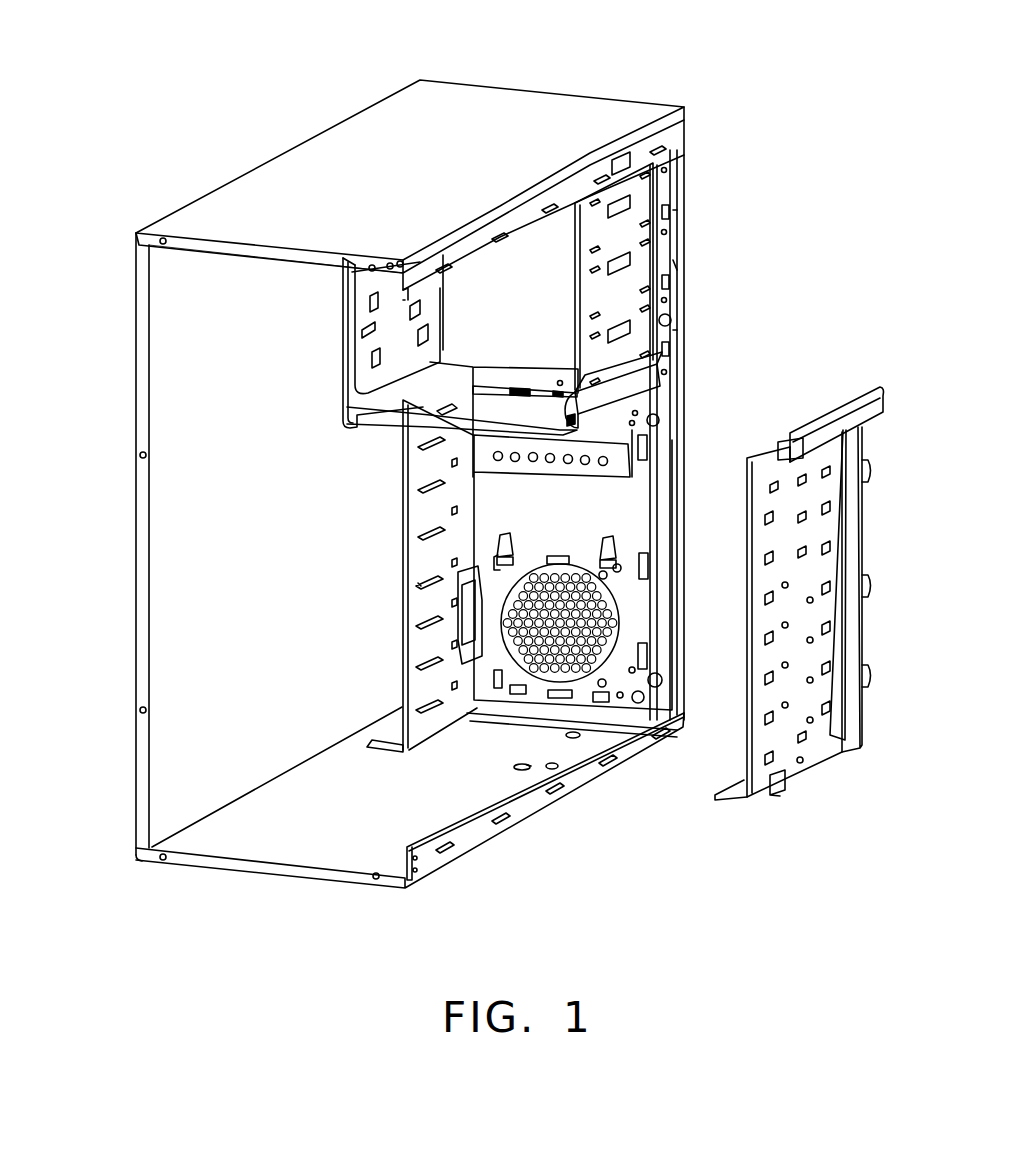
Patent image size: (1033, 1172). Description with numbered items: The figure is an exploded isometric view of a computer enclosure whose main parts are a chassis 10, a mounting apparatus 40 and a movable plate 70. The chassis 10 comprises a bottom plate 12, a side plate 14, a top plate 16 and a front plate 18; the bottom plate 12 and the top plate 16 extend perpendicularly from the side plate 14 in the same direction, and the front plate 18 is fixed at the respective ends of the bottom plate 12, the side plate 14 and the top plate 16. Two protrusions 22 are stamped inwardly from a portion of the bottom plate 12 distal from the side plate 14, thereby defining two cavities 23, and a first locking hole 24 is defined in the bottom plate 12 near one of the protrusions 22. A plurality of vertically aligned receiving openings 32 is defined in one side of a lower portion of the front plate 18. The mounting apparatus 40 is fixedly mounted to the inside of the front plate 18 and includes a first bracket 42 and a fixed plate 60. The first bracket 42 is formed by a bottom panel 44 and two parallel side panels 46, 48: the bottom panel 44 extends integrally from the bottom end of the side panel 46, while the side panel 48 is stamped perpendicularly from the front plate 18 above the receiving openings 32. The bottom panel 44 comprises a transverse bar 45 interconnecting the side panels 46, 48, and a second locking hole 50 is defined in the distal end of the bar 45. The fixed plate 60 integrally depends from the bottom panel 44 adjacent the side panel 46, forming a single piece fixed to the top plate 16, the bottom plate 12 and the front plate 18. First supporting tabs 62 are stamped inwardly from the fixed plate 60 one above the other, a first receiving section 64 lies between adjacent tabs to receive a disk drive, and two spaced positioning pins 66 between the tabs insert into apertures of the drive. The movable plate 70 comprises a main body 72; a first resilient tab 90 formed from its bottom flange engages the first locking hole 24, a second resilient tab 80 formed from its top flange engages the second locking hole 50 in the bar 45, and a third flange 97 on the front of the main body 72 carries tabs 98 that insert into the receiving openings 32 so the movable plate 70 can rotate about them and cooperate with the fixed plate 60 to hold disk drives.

The chassis 10 is at (549, 77).
The bottom plate 12 is at (277, 828).
The side plate 14 is at (210, 538).
The top plate 16 is at (372, 140).
The front plate 18 is at (655, 622).
The protrusion 22 is at (520, 772).
The cavity 23 is at (531, 770).
The first locking hole 24 is at (557, 768).
The receiving opening 32 is at (647, 660).
The mounting apparatus 40 is at (656, 265).
The first bracket 42 is at (388, 408).
The bottom panel 44 is at (425, 385).
The transverse bar 45 is at (425, 435).
The side panel 46 is at (363, 302).
The side panel 48 is at (634, 333).
The second locking hole 50 is at (662, 363).
The fixed plate 60 is at (417, 638).
The first supporting tab 62 is at (420, 660).
The first receiving section 64 is at (430, 690).
The positioning pin 66 is at (420, 710).
The movable plate 70 is at (872, 391).
The main body 72 is at (830, 500).
The second resilient tab 80 is at (805, 441).
The first resilient tab 90 is at (775, 785).
The third flange 97 is at (850, 640).
The tab 98 is at (869, 583).